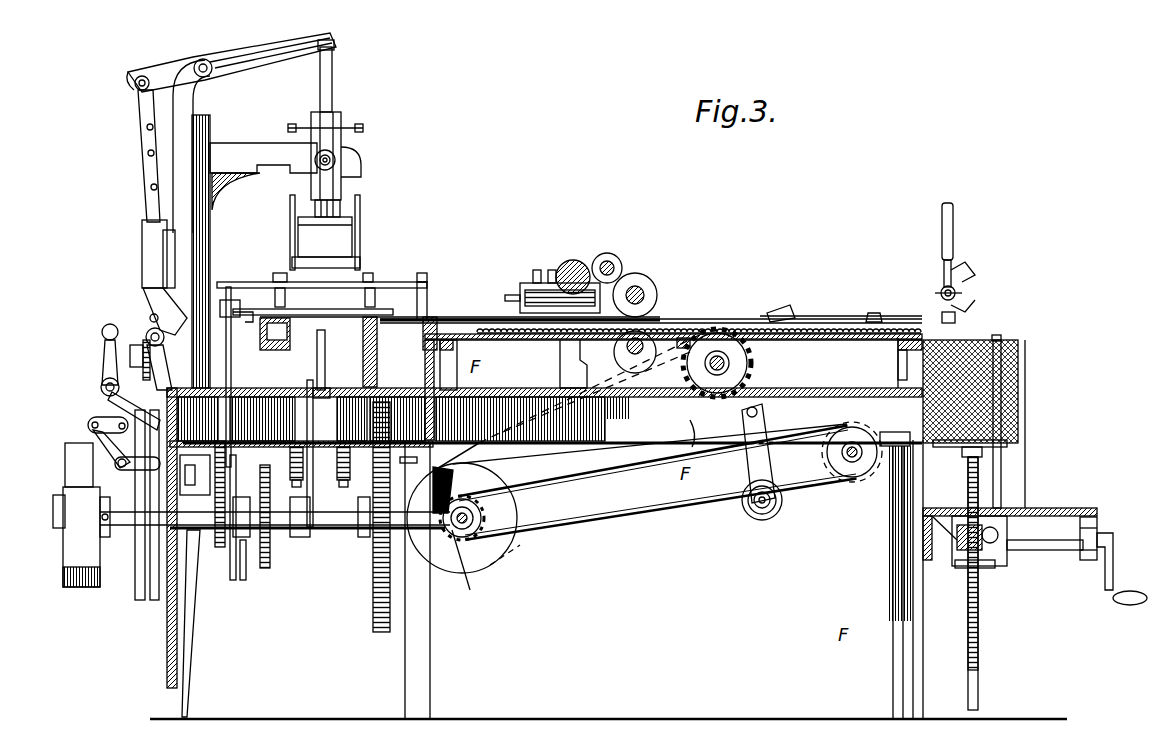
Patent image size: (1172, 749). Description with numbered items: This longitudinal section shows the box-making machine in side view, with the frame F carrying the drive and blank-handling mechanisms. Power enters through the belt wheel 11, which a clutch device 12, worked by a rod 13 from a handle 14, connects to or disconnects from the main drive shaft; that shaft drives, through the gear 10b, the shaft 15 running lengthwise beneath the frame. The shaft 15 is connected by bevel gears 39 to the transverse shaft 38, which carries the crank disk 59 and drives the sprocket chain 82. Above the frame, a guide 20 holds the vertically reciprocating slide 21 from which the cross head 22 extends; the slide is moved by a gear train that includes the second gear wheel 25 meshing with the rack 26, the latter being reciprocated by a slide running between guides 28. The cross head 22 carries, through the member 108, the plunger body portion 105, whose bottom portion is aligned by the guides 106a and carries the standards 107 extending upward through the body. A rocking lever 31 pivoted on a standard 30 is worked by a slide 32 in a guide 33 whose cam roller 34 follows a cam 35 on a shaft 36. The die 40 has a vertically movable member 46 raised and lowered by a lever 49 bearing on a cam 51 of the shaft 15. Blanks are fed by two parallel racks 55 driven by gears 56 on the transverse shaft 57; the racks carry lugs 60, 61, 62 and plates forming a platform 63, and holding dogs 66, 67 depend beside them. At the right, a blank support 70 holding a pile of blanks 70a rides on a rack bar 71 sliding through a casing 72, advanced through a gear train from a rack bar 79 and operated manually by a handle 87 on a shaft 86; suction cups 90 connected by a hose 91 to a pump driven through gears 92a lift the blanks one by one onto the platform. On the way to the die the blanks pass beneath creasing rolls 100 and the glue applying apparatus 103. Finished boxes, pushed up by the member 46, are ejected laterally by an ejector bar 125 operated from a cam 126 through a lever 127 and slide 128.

The standard 30 is at (195, 62).
The rocking lever 31 is at (248, 52).
The standards 107 is at (330, 100).
The slide 21 is at (212, 128).
The horizontal arm or cross head 22 is at (240, 148).
The member 108 is at (345, 190).
The guides 106a is at (362, 205).
The body portion 105 is at (352, 242).
The ejector bar 125 is at (328, 313).
The slide 32 is at (145, 200).
The guide 33 is at (142, 246).
The guide 20 is at (215, 240).
The cam 35 is at (178, 292).
The slide 128 is at (233, 290).
The cam roller 34 is at (150, 316).
The shaft 36 is at (147, 330).
The vertically movable member 46 is at (305, 315).
The lug 60 is at (450, 318).
The handle 14 is at (102, 330).
The second gear wheel 25 is at (105, 352).
The rod 13 is at (108, 384).
The rack 26 is at (100, 388).
The die 40 is at (270, 345).
The glue applying apparatus 103 is at (577, 262).
The creasing rolls 100 is at (650, 283).
The lug 61 is at (645, 333).
The racks 55 is at (700, 327).
The gears 56 is at (725, 335).
The holding dog 66 is at (768, 312).
The platform 63 is at (822, 318).
The lug 62 is at (875, 315).
The hose 91 is at (953, 238).
The suction cups 90 is at (956, 314).
The holding dog 67 is at (565, 345).
The transverse shaft 57 is at (752, 363).
The pile of blanks 70a is at (1025, 400).
The blank support 70 is at (1010, 447).
The belt wheel 11 is at (66, 473).
The lever 127 is at (227, 458).
The lever 49 is at (320, 470).
The shaft 38 is at (485, 512).
The sprocket chain 82 is at (710, 493).
The rack bar 79 is at (875, 482).
The clutch device 12 is at (93, 582).
The shaft 15 is at (351, 528).
The cam 51 is at (272, 537).
The gears 92a is at (263, 574).
The crank disk 59 is at (494, 548).
The bevel gears 39 is at (470, 590).
The casing 72 is at (955, 568).
The shaft 86 is at (1057, 551).
The handle 87 is at (1113, 575).
The guides 28 is at (146, 600).
The cam 126 is at (238, 580).
The gear 10b is at (370, 590).
The rack bar 71 is at (980, 634).